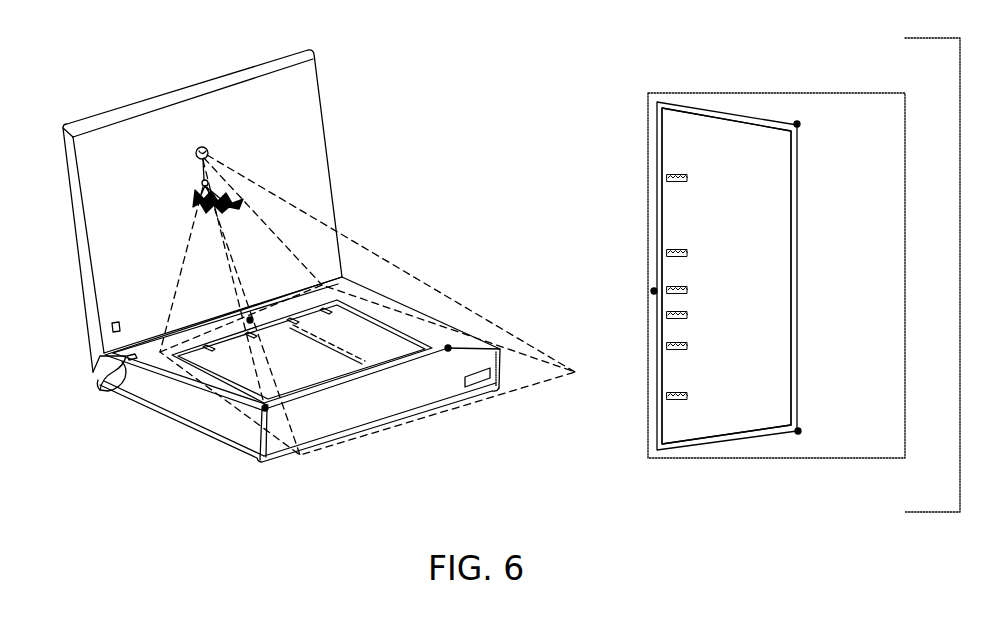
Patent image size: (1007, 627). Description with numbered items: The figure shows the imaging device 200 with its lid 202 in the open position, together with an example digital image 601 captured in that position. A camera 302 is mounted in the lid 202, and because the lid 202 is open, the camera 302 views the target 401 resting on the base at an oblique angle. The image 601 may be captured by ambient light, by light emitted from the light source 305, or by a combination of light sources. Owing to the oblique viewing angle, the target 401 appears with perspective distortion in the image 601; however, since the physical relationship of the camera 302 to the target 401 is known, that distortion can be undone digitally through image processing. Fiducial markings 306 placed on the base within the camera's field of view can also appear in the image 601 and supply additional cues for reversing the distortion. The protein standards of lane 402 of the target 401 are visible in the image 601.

The imaging device 200 is at (148, 437).
The lid 202 is at (326, 157).
The camera 302 is at (209, 150).
The light source 305 is at (202, 184).
The fiducial markings 306 is at (250, 320).
The target 401 is at (356, 330).
The lane 402 is at (672, 140).
The digital image 601 is at (655, 146).